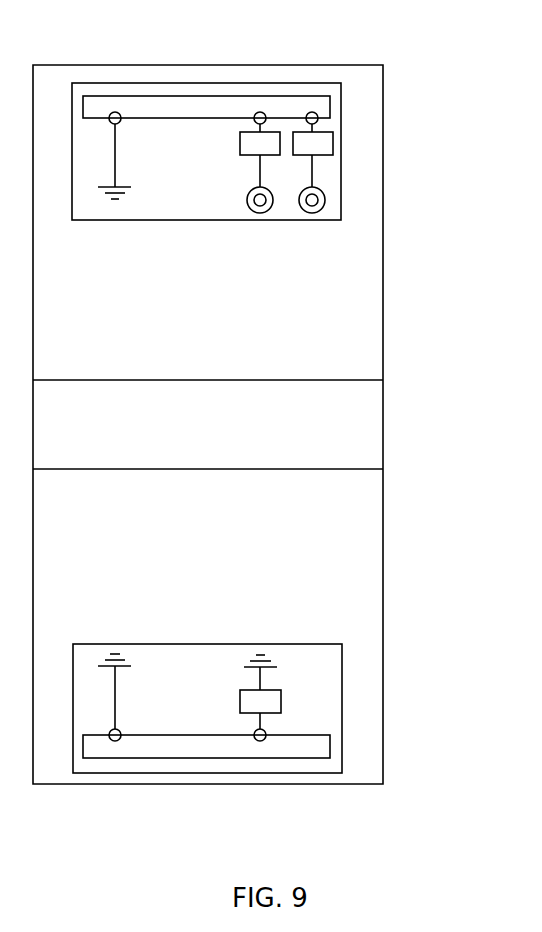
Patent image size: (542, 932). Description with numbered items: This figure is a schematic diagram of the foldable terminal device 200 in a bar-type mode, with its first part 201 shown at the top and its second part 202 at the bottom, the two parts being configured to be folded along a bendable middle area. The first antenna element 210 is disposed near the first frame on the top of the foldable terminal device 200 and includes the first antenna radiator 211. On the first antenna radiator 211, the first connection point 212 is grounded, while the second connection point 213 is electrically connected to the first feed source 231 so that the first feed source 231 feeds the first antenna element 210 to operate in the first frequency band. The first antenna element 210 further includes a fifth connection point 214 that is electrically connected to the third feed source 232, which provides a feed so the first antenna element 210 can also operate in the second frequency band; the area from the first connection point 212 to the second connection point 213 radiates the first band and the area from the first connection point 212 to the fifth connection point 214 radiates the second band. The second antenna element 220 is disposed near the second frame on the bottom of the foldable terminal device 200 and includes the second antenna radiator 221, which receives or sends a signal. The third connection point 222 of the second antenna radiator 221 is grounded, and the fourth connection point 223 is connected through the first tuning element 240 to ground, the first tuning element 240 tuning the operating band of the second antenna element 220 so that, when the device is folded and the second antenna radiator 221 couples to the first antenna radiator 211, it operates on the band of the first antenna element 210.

The foldable terminal device 200 is at (75, 32).
The first antenna element 210 is at (355, 64).
The first part 201 is at (341, 207).
The first antenna radiator 211 is at (217, 96).
The first connection point 212 is at (118, 112).
The second connection point 213 is at (265, 114).
The fifth connection point 214 is at (316, 114).
The first feed source 231 is at (272, 192).
The third feed source 232 is at (325, 192).
The second antenna element 220 is at (342, 785).
The second part 202 is at (343, 650).
The second antenna radiator 221 is at (217, 758).
The third connection point 222 is at (118, 741).
The fourth connection point 223 is at (266, 739).
The first tuning element 240 is at (281, 702).